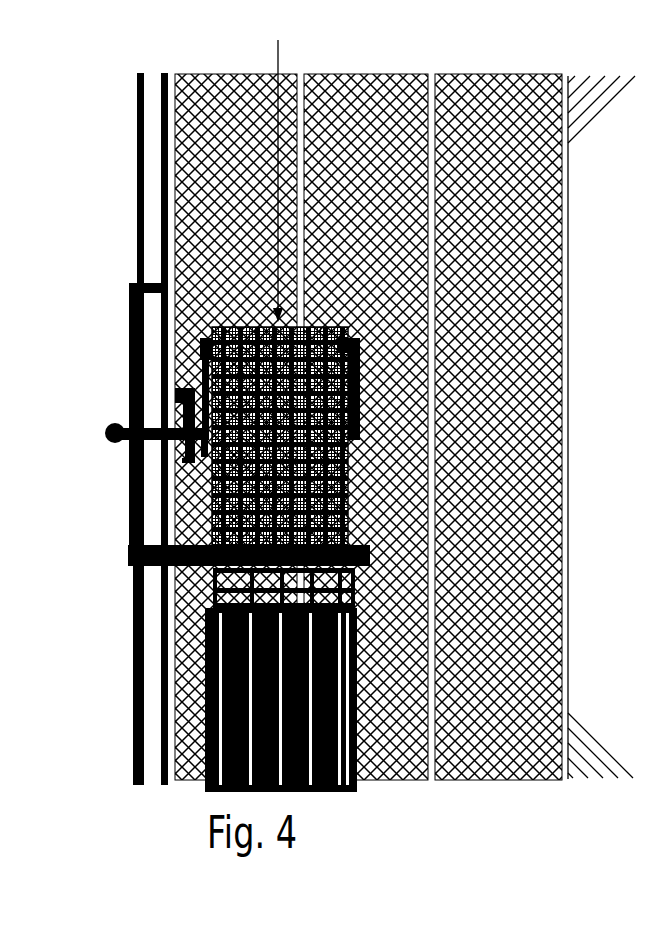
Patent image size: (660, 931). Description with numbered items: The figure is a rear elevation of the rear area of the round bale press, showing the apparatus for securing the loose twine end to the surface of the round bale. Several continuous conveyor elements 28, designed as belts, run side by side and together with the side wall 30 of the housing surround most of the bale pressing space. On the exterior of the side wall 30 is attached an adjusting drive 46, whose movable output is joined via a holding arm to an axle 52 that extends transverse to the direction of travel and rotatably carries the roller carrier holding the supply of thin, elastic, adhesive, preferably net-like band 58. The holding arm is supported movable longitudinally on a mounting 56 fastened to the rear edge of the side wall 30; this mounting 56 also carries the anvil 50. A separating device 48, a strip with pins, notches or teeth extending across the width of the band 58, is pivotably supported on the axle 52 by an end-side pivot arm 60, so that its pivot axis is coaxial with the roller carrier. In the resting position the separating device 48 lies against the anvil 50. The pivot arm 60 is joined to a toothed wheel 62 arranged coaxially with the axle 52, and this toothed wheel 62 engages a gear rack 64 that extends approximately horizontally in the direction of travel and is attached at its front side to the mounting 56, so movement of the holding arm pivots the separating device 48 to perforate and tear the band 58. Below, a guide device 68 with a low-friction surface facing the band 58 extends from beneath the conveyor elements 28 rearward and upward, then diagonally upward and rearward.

The conveyor elements 28 is at (205, 92).
The side wall 30 is at (134, 148).
The adjusting drive 46 is at (110, 424).
The separating device 48 is at (358, 341).
The anvil 50 is at (370, 553).
The axle 52 is at (175, 392).
The mounting 56 is at (129, 286).
The band 58 is at (355, 594).
The pivot arm 60 is at (362, 388).
The toothed wheel 62 is at (185, 458).
The gear rack 64 is at (199, 338).
The guide device 68 is at (346, 792).